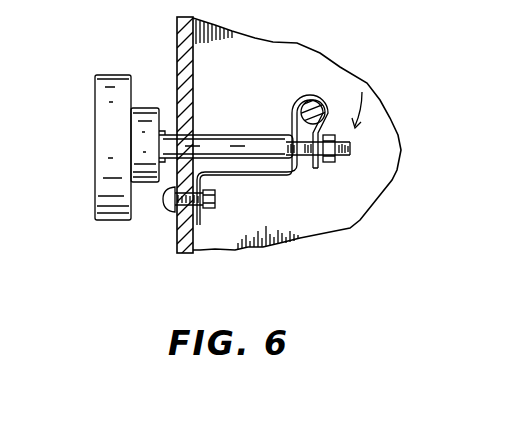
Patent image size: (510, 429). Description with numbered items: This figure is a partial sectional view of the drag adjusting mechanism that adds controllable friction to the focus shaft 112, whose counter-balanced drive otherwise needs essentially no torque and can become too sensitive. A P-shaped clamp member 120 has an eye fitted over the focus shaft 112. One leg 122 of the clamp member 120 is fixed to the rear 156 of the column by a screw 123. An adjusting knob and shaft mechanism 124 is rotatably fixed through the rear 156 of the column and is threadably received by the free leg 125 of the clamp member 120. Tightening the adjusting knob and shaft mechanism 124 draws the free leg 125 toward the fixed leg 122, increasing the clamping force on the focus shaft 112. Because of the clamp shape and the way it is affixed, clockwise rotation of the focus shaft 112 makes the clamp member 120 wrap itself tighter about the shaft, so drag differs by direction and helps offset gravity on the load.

The focus shaft 112 is at (310, 100).
The P-shaped clamp member 120 is at (326, 98).
The leg of clamp member 122 is at (297, 117).
The screw 123 is at (166, 199).
The adjusting knob and shaft mechanism 124 is at (95, 158).
The free leg of clamp member 125 is at (318, 168).
The wall 156 is at (177, 43).